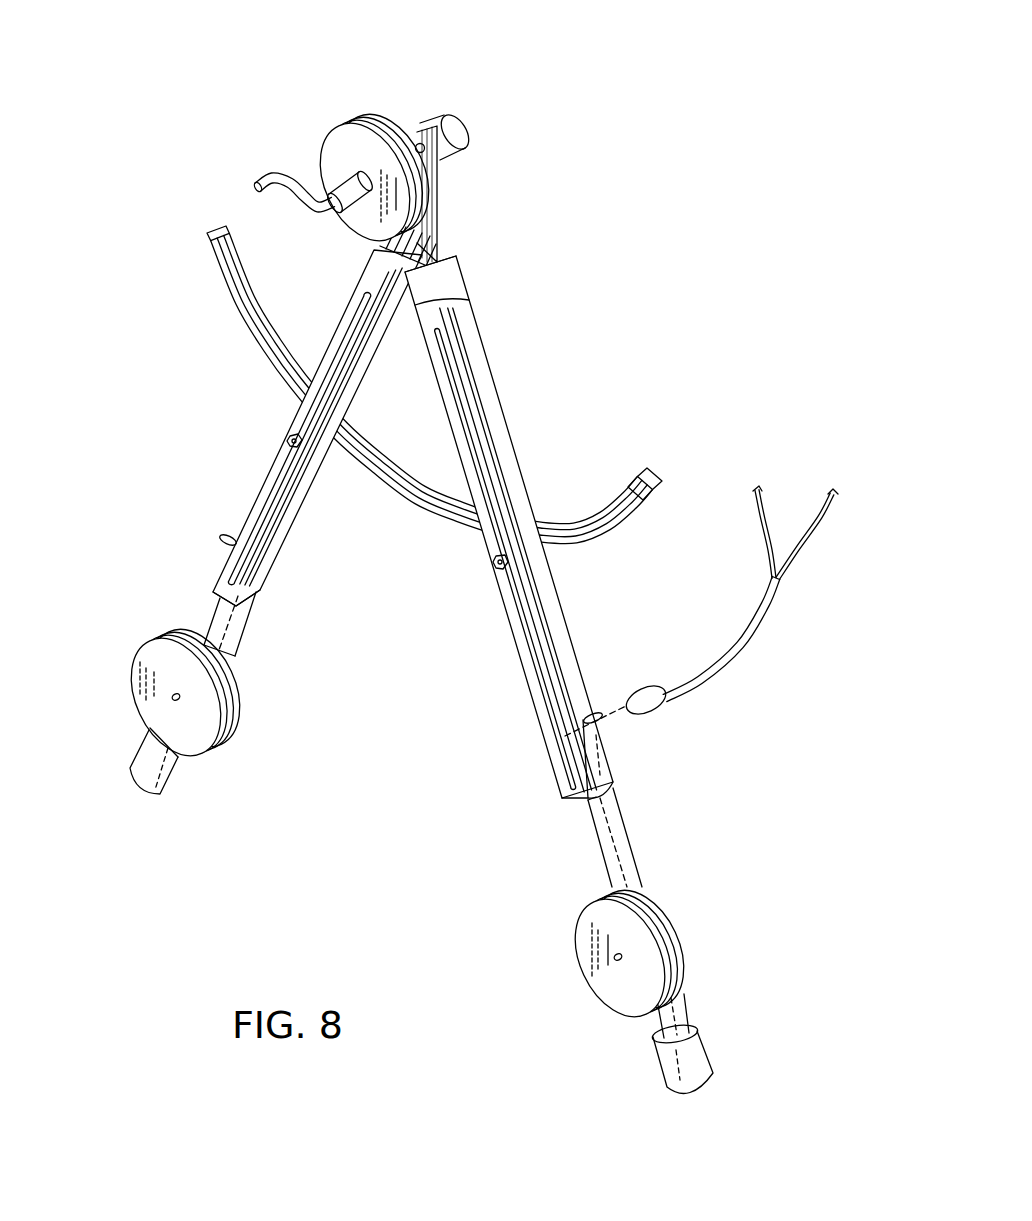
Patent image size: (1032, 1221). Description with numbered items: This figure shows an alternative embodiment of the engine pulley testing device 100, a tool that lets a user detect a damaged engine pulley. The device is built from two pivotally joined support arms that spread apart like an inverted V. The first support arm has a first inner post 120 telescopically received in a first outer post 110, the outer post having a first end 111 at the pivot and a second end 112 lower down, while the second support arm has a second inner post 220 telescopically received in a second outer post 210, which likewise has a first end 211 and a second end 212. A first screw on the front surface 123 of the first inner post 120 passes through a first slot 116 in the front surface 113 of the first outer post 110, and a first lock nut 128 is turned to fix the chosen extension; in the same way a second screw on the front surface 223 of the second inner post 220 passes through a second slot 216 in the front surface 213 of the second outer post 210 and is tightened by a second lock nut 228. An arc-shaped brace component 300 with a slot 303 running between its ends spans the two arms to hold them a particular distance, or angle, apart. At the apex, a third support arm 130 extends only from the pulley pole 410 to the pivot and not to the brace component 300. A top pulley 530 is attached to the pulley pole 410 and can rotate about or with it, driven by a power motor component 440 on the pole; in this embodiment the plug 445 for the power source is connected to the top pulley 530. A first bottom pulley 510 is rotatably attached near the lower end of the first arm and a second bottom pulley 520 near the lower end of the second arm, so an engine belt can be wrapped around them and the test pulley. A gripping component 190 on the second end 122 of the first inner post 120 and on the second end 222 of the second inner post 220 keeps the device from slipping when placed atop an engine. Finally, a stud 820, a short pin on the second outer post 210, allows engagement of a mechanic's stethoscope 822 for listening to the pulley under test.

The engine pulley testing device 100 is at (690, 232).
The first outer post 110 is at (276, 416).
The first end of first outer post 111 is at (368, 262).
The second end of first outer post 112 is at (212, 580).
The front surface of first outer post 113 is at (349, 313).
The first slot 116 is at (256, 505).
The first inner post 120 is at (242, 645).
The second end of first inner post 122 is at (178, 758).
The front surface of first inner post 123 is at (235, 664).
The first lock nut 128 is at (291, 438).
The third support arm 130 is at (438, 190).
The gripping component 190 is at (163, 800).
The second outer post 210 is at (553, 520).
The first end of second outer post 211 is at (472, 288).
The second end of second outer post 212 is at (612, 772).
The front surface of second outer post 213 is at (437, 302).
The second slot 216 is at (487, 480).
The second inner post 220 is at (645, 885).
The second end of second inner post 222 is at (662, 1028).
The front surface of second inner post 223 is at (592, 813).
The second lock nut 228 is at (495, 590).
The brace component 300 is at (345, 457).
The slot of brace component 303 is at (634, 485).
The pulley pole 410 is at (417, 144).
The power motor component 440 is at (443, 118).
The plug 445 is at (325, 172).
The first bottom pulley 510 is at (136, 655).
The second bottom pulley 520 is at (590, 932).
The top pulley 530 is at (336, 140).
The stud 820 is at (585, 718).
The mechanic's stethoscope 822 is at (765, 645).